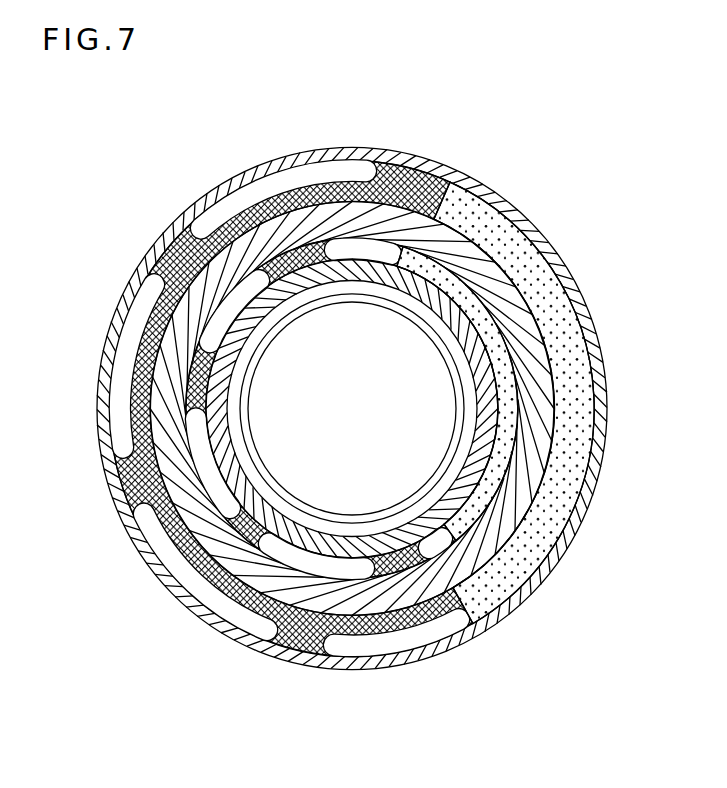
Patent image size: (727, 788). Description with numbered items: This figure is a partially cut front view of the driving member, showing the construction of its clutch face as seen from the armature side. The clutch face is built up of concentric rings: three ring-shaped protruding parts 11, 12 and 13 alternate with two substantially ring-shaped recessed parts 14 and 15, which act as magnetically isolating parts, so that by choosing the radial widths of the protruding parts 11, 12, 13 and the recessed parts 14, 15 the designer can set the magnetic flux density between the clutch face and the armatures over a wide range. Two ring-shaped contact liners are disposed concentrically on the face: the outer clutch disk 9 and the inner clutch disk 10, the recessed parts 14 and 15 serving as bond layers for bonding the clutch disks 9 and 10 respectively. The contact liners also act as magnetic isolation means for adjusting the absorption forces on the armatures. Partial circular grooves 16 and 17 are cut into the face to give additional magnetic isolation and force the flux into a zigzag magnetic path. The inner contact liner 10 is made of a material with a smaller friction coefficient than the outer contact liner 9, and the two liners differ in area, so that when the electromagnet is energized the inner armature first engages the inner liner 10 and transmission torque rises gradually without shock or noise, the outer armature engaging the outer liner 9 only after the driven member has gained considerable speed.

The outer contact liner 9 is at (560, 302).
The inner contact liner 10 is at (510, 422).
The ring-shaped protruding part 11 is at (215, 196).
The ring-shaped protruding part 12 is at (178, 330).
The ring-shaped protruding part 13 is at (215, 437).
The recessed part 14 is at (172, 252).
The recessed part 15 is at (190, 372).
The partial circular groove 16 is at (200, 226).
The partial circular groove 17 is at (205, 472).